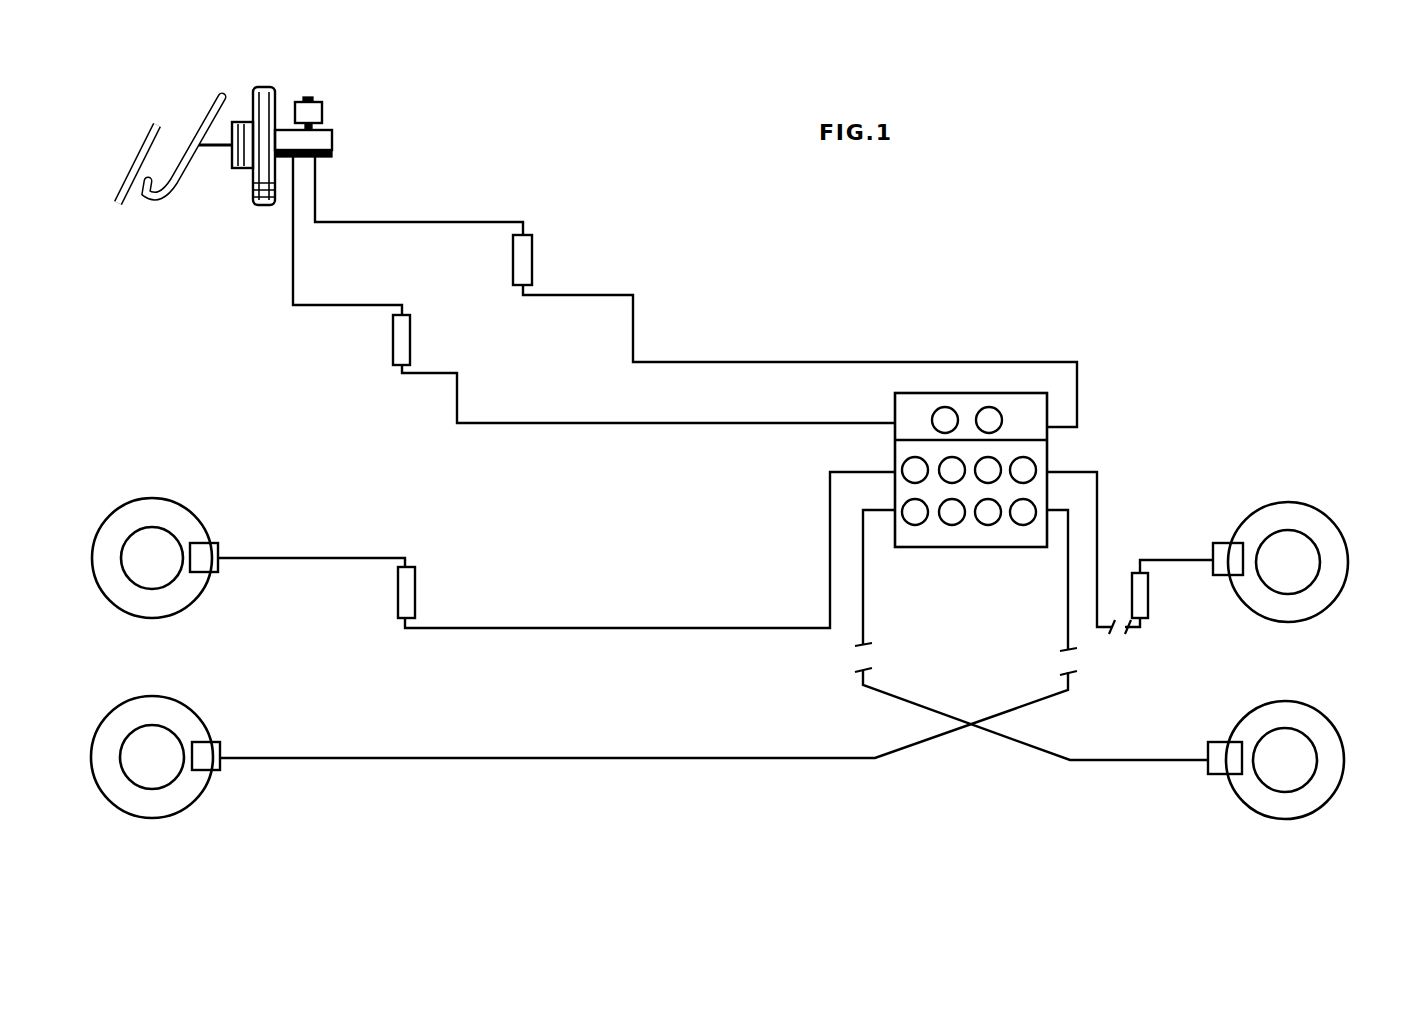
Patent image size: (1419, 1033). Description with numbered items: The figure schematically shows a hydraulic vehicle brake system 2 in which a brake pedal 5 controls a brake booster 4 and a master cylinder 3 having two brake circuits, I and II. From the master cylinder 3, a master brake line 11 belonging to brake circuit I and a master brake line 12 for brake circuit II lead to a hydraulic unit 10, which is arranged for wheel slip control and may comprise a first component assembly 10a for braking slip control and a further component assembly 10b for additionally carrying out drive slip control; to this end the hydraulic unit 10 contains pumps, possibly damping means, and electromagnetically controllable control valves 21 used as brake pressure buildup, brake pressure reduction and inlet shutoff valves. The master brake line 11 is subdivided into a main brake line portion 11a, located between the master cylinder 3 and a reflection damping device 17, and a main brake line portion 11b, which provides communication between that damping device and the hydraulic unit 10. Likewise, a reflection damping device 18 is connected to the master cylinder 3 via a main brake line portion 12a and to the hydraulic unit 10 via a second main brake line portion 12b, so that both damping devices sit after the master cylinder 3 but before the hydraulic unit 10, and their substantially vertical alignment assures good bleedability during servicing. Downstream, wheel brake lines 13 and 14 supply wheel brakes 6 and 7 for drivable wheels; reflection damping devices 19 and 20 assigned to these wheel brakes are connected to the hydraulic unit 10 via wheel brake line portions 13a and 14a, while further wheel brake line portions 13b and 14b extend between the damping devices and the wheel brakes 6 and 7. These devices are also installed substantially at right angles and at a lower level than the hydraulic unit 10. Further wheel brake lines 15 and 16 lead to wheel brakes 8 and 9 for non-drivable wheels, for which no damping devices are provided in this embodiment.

The hydraulic vehicle brake system 2 is at (278, 371).
The master cylinder 3 is at (335, 140).
The brake booster 4 is at (263, 86).
The brake pedal 5 is at (147, 149).
The wheel brake 6 is at (215, 555).
The wheel brake 7 is at (1223, 555).
The wheel brake 8 is at (1220, 752).
The wheel brake 9 is at (213, 752).
The hydraulic unit 10 is at (865, 455).
The first component assembly 10a is at (912, 535).
The further component assembly 10b is at (913, 398).
The master brake line 11 is at (333, 322).
The main brake line portion 11a is at (361, 310).
The main brake line portion 11b is at (633, 425).
The master brake line 12 is at (472, 242).
The main brake line portion 12a is at (398, 220).
The second main brake line portion 12b is at (722, 364).
The wheel brake line 13 is at (362, 548).
The wheel brake line portion 13a is at (645, 628).
The wheel brake line portion 13b is at (320, 556).
The wheel brake line 14 is at (1102, 571).
The wheel brake line portion 14a is at (1097, 540).
The wheel brake line portion 14b is at (1188, 562).
The wheel brake line 15 is at (1125, 758).
The wheel brake line 16 is at (540, 758).
The reflection damping device 17 is at (402, 340).
The reflection damping device 18 is at (532, 268).
The reflection damping device 19 is at (398, 596).
The reflection damping device 20 is at (1145, 600).
The control valves 21 is at (948, 408).